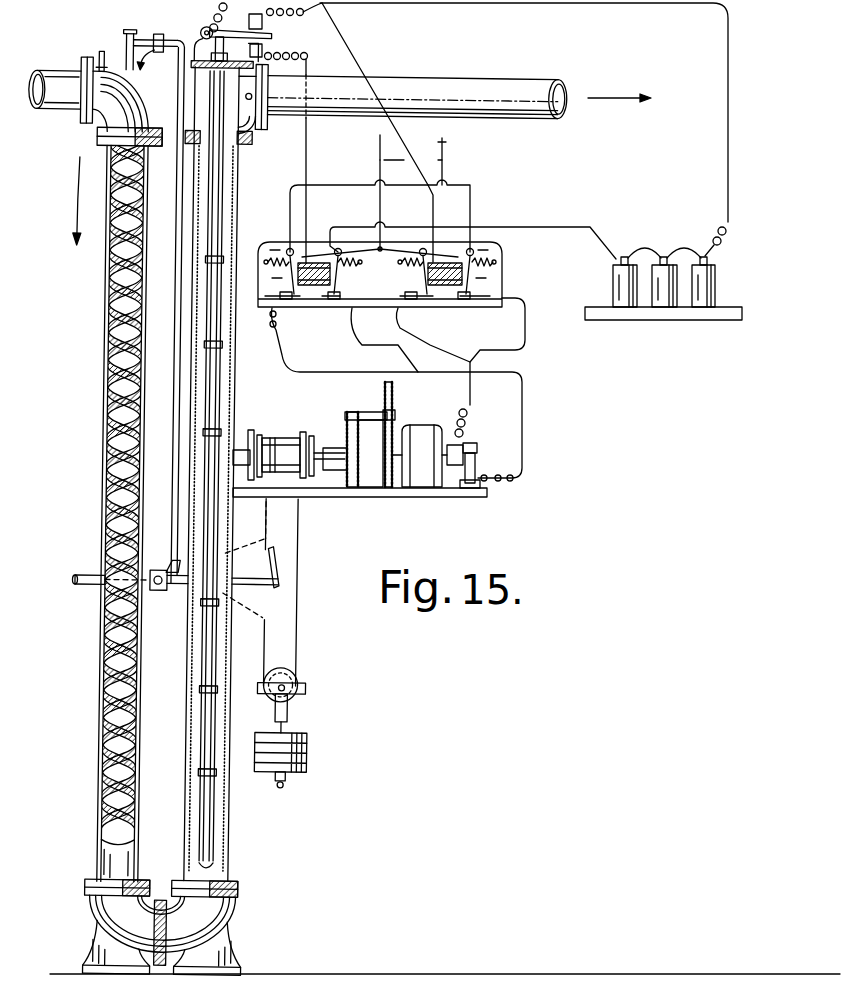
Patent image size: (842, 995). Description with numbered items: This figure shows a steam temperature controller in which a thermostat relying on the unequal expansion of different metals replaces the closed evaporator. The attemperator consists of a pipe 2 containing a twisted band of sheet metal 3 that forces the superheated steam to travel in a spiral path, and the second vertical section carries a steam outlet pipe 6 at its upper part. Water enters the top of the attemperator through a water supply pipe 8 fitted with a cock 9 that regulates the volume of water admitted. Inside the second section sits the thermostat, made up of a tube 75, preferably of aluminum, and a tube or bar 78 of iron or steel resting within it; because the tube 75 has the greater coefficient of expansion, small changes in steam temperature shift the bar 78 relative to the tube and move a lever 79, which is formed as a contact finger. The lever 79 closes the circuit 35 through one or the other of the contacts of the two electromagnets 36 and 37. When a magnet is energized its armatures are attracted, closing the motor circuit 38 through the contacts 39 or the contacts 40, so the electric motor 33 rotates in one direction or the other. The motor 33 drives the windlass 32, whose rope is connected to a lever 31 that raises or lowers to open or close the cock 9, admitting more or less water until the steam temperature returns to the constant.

The pipe 2 is at (108, 283).
The band of sheet metal 3 is at (118, 374).
The steam outlet pipe 6 is at (524, 73).
The water supply pipe 8 is at (180, 324).
The cock 9 is at (178, 566).
The lever 31 is at (239, 578).
The windlass 32 is at (272, 447).
The electric motor 33 is at (412, 437).
The circuit 35 is at (520, 3).
The electromagnet 36 is at (263, 20).
The electromagnet 37 is at (268, 47).
The motor circuit 38 is at (413, 148).
The contacts 39 is at (445, 296).
The contacts 40 is at (302, 296).
The tube 75 is at (226, 733).
The tube or bar 78 is at (212, 663).
The lever 79 is at (233, 32).